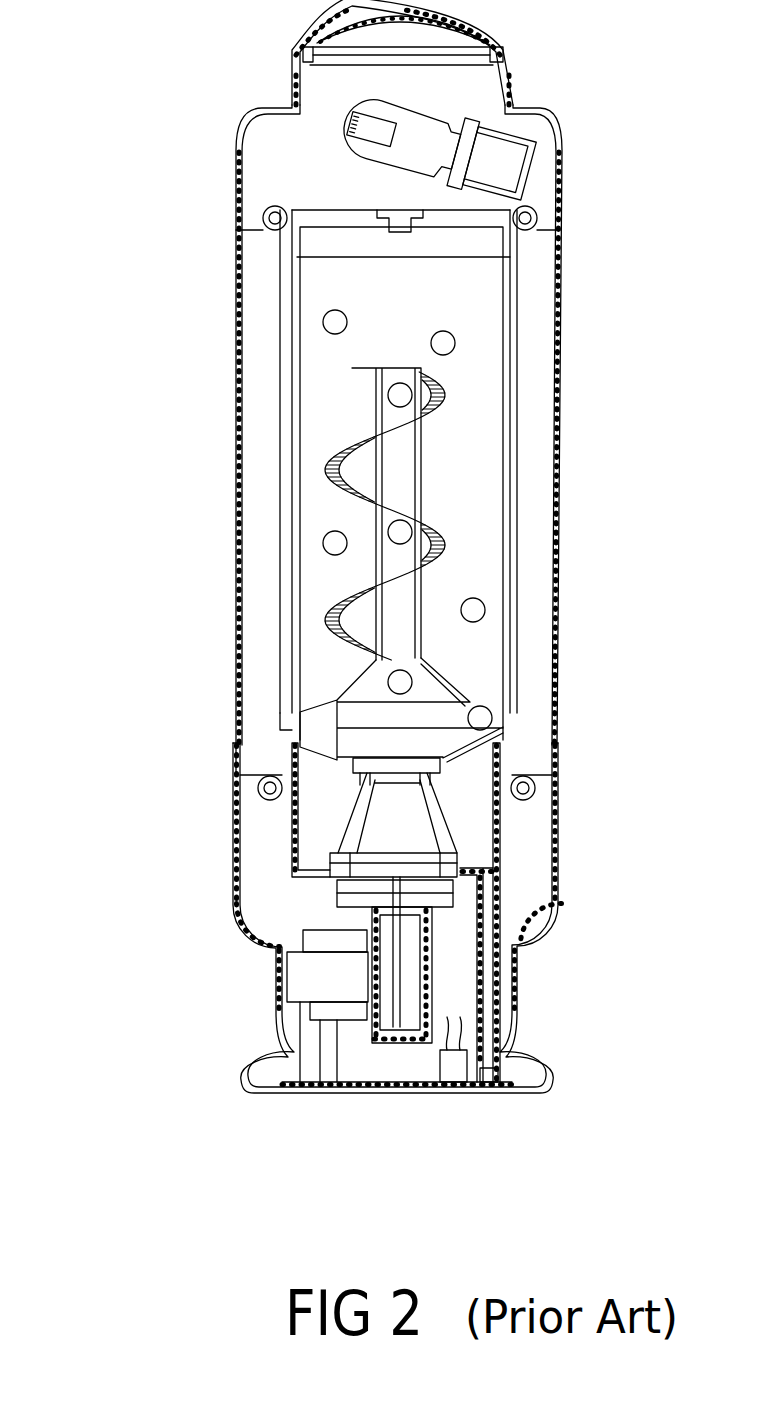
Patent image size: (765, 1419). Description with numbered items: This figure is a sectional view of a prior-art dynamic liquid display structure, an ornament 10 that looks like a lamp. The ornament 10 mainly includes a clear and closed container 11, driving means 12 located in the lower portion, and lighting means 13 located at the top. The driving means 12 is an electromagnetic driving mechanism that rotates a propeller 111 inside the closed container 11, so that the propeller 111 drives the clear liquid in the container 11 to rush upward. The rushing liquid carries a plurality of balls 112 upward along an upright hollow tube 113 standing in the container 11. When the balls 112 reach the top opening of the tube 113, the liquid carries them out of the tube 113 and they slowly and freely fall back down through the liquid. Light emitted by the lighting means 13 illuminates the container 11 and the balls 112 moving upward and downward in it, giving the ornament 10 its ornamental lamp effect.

The ornament 10 is at (197, 405).
The clear and closed container 11 is at (278, 530).
The driving means 12 is at (192, 923).
The lighting means 13 is at (510, 143).
The propeller 111 is at (500, 893).
The balls 112 is at (330, 316).
The upright hollow tube 113 is at (420, 462).